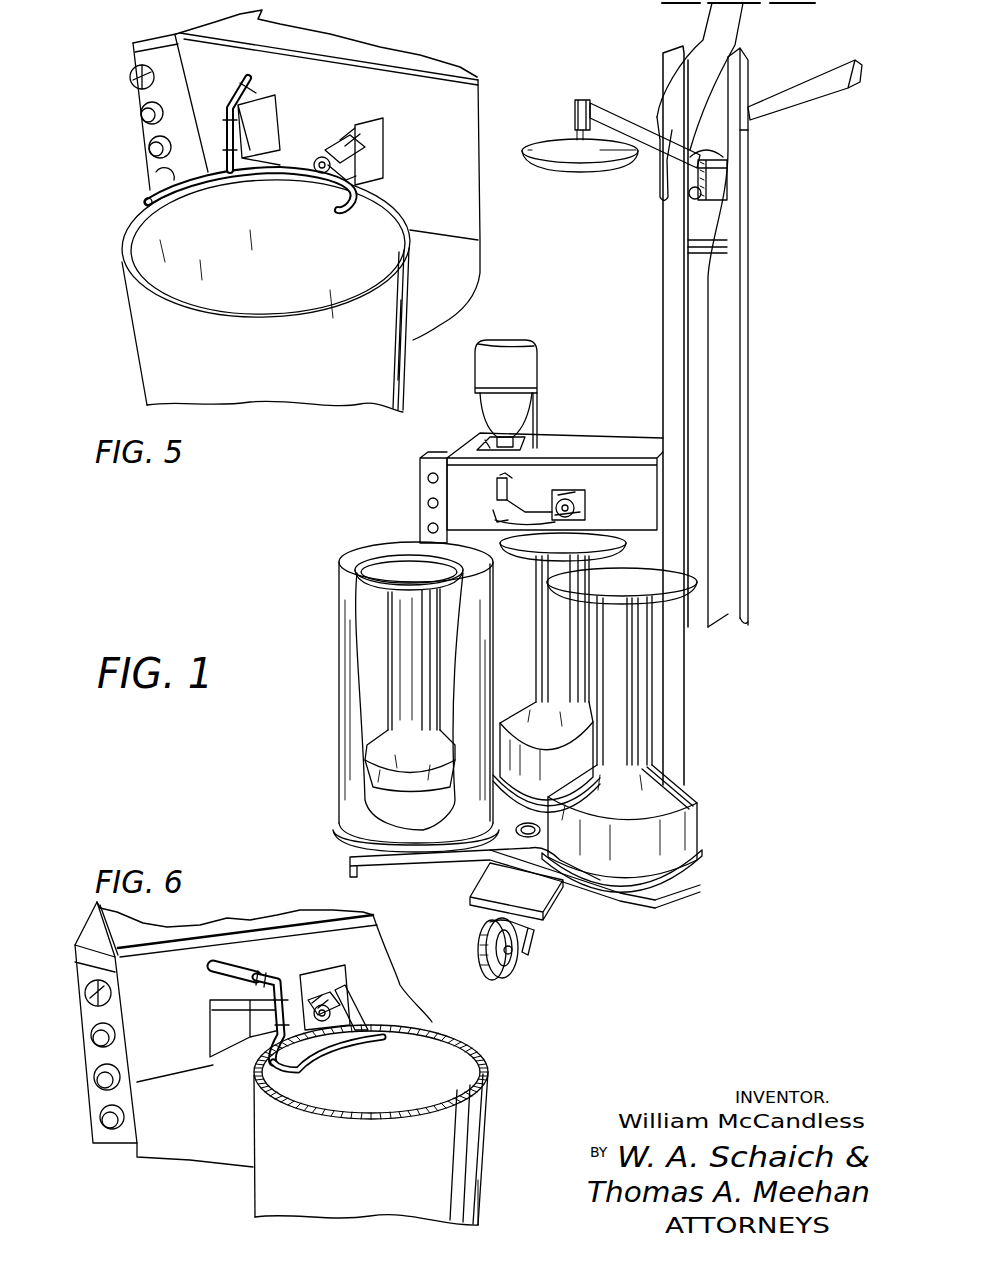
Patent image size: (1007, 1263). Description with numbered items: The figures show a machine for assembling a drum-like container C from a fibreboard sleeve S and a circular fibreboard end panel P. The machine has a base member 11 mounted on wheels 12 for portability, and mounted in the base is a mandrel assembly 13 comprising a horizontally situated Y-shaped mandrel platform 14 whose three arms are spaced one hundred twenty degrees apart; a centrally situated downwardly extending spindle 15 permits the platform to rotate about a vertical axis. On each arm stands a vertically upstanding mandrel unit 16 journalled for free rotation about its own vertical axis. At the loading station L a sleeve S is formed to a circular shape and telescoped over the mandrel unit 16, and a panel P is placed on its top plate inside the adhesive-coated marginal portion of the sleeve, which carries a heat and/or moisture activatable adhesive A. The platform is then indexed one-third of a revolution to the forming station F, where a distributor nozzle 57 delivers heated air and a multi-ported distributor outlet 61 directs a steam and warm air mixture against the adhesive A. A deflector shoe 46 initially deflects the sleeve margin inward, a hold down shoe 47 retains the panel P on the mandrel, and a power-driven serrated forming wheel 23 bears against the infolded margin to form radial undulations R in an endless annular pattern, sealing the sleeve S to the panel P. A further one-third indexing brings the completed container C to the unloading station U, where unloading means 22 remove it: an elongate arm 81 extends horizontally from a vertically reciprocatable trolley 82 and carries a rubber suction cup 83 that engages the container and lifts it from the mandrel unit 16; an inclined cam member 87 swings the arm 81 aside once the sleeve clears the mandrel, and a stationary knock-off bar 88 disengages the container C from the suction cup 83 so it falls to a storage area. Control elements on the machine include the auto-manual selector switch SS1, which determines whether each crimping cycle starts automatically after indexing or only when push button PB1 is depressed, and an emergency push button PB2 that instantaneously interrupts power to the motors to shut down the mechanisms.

In FIG. 1, the base member 11 is at (582, 902).
In FIG. 1, the wheels 12 is at (517, 963).
In FIG. 1, the mandrel assembly 13 is at (696, 775).
In FIG. 1, the mandrel platform 14 is at (378, 868).
In FIG. 1, the spindle 15 is at (478, 866).
In FIG. 1, the mandrel unit 16 is at (378, 689).
In FIG. 1, the unloading means 22 is at (752, 332).
In FIG. 5, the forming wheel 23 is at (330, 150).
In FIG. 1, the forming wheel 23 is at (567, 492).
In FIG. 6, the forming wheel 23 is at (323, 1005).
In FIG. 6, the deflector shoe 46 is at (303, 1003).
In FIG. 1, the hold down shoe 47 is at (541, 520).
In FIG. 6, the hold down shoe 47 is at (352, 1017).
In FIG. 5, the distributor nozzle 57 is at (262, 133).
In FIG. 6, the distributor nozzle 57 is at (237, 1034).
In FIG. 5, the multi-ported distributor outlet 61 is at (203, 180).
In FIG. 6, the multi-ported distributor outlet 61 is at (305, 1070).
In FIG. 1, the elongate arm 81 is at (613, 112).
In FIG. 1, the trolley 82 is at (697, 220).
In FIG. 1, the suction cup 83 is at (530, 148).
In FIG. 1, the inclined cam member 87 is at (731, 42).
In FIG. 1, the knock-off bar 88 is at (810, 85).
In FIG. 5, the forming station F is at (137, 172).
In FIG. 1, the forming station F is at (636, 538).
In FIG. 6, the forming station F is at (440, 1006).
In FIG. 5, the adhesive A is at (140, 207).
In FIG. 1, the adhesive A is at (393, 545).
In FIG. 5, the end panel P is at (143, 262).
In FIG. 1, the end panel P is at (388, 570).
In FIG. 6, the end panel P is at (458, 1058).
In FIG. 5, the sleeve S is at (406, 366).
In FIG. 1, the sleeve S is at (338, 630).
In FIG. 6, the sleeve S is at (486, 1127).
In FIG. 1, the loading station L is at (318, 575).
In FIG. 6, the loading station L is at (86, 995).
In FIG. 1, the unloading station U is at (695, 727).
In FIG. 6, the radial undulations R is at (490, 1075).
In FIG. 6, the container C is at (478, 1195).
In FIG. 6, the push button PB1 is at (92, 1047).
In FIG. 6, the auto-manual selector switch SS1 is at (96, 1083).
In FIG. 6, the push button PB2 is at (125, 1128).